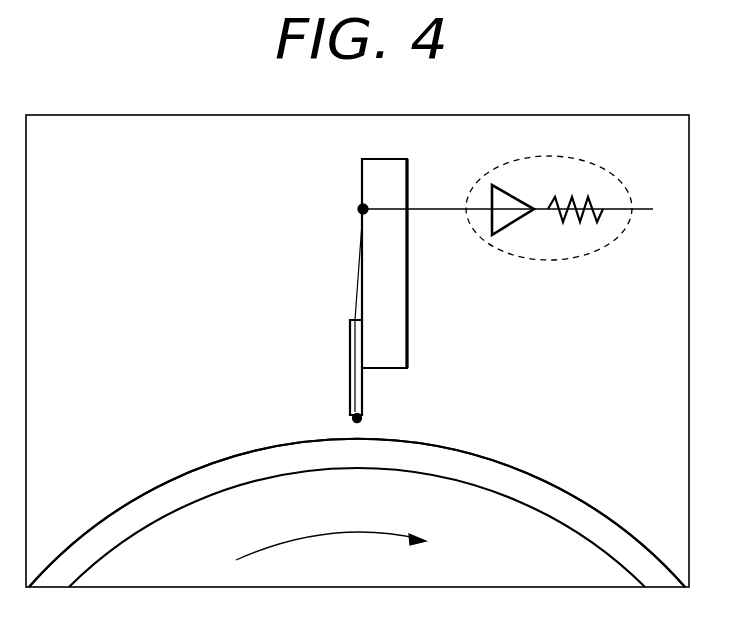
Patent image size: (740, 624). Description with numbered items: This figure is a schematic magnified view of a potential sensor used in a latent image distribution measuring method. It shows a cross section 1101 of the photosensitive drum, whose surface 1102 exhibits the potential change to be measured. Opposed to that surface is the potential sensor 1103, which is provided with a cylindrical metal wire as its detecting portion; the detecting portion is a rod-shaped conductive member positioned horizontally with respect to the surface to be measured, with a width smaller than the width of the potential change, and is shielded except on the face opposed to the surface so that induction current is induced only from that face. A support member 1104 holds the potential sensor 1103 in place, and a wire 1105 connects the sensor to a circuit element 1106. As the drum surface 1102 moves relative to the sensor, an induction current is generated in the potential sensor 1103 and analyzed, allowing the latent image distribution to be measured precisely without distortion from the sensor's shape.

The cross section of the photosensitive drum 1101 is at (525, 482).
The surface 1102 is at (250, 450).
The potential sensor 1103 is at (364, 418).
The support member 1104 is at (403, 330).
The wire 1105 is at (358, 312).
The circuit element 1106 is at (587, 256).